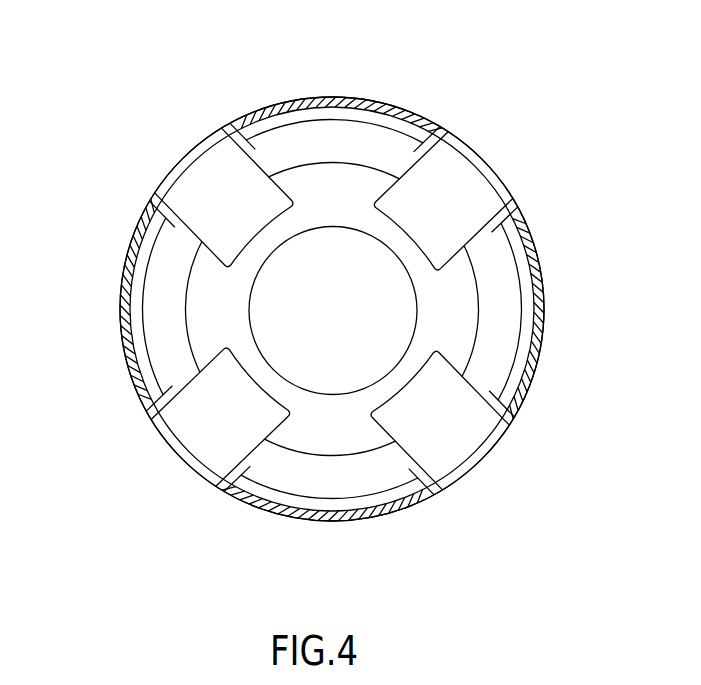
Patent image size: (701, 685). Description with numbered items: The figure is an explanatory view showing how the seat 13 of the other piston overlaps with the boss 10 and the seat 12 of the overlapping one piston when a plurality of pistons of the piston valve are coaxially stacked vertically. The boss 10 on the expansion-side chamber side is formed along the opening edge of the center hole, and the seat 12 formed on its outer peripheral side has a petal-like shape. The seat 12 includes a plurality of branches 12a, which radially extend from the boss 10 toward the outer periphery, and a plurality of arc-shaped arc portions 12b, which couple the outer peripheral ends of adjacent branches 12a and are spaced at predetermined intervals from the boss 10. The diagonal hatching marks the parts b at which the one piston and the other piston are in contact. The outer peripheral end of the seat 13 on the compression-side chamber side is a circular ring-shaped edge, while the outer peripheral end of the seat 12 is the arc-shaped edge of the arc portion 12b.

The boss 10 is at (270, 243).
The seat 12 is at (413, 92).
The branches 12a is at (236, 162).
The arc portions 12b is at (348, 97).
The seat 13 is at (178, 162).
The parts b is at (283, 90).